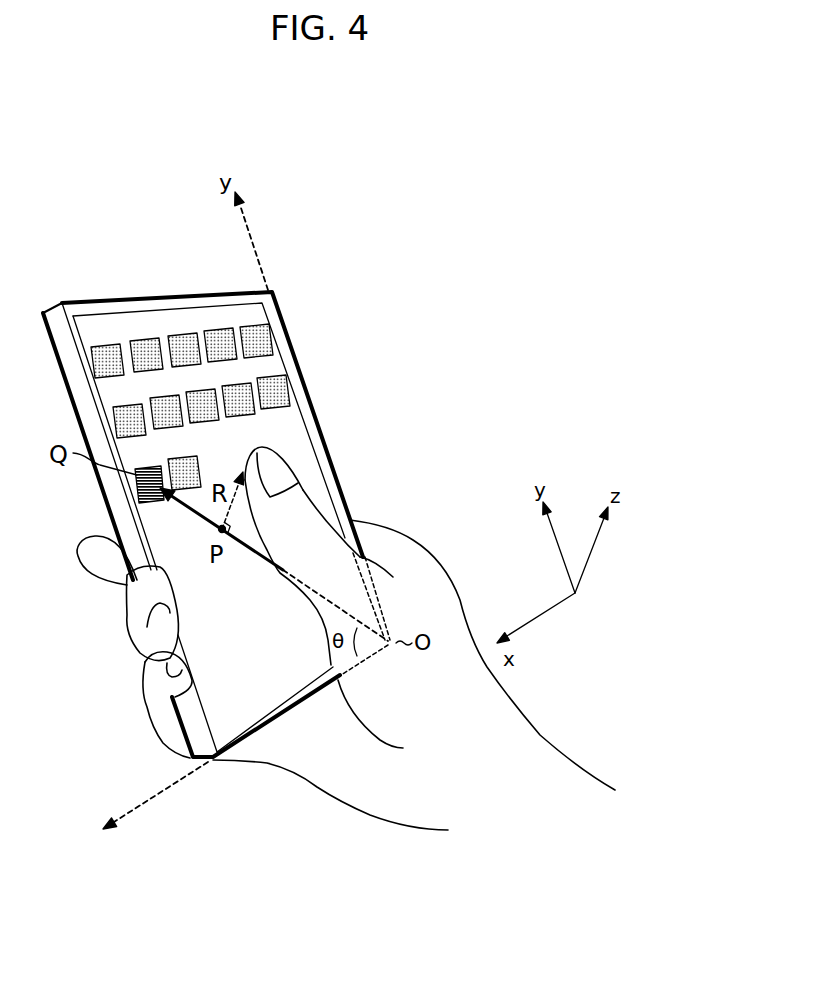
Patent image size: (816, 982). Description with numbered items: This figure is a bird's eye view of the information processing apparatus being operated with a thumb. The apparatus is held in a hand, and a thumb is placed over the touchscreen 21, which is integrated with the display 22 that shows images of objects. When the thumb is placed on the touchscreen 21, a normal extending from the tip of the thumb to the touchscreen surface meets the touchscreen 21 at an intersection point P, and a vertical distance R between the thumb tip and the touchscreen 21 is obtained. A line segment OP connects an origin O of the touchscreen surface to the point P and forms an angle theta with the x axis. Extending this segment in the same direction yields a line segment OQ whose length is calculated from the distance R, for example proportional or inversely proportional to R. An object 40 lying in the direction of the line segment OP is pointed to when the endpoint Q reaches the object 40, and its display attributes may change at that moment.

The touchscreen 21 is at (137, 337).
The display 22 is at (286, 352).
The object 40 is at (115, 492).